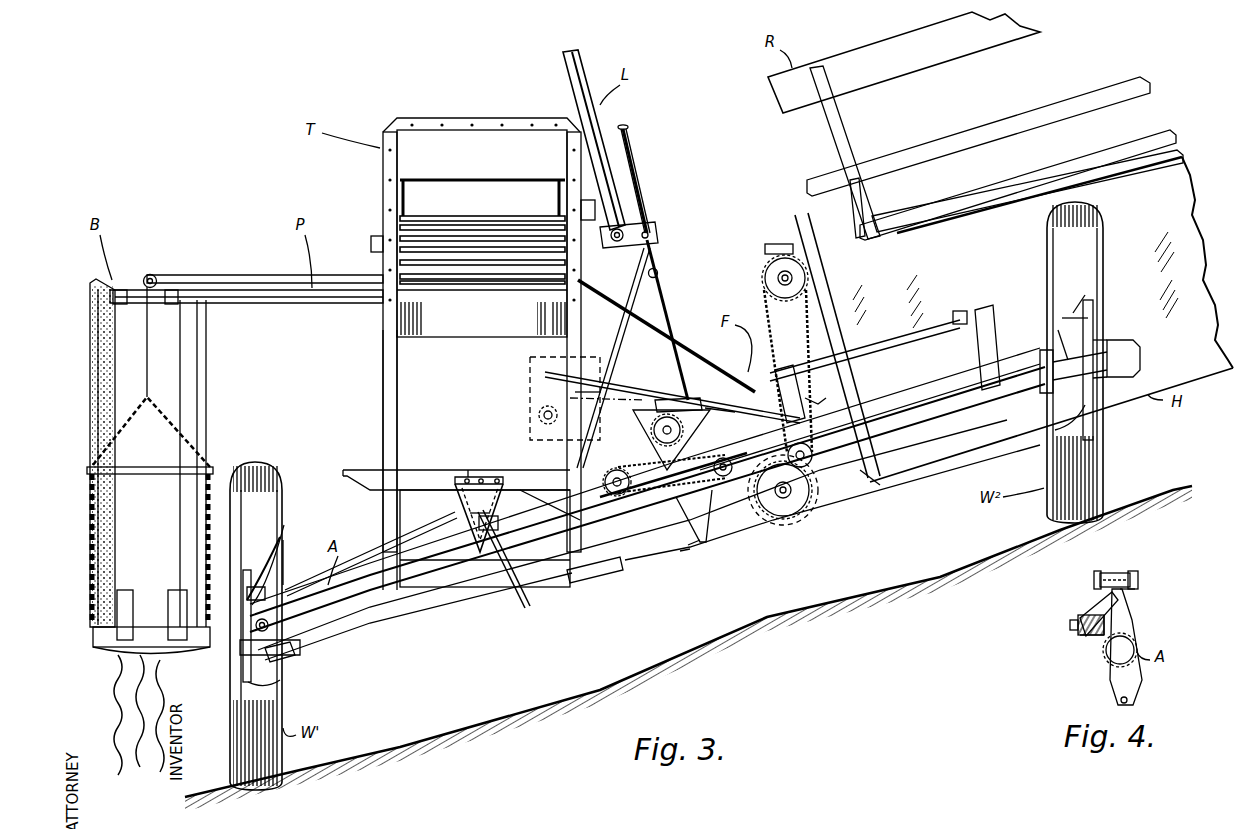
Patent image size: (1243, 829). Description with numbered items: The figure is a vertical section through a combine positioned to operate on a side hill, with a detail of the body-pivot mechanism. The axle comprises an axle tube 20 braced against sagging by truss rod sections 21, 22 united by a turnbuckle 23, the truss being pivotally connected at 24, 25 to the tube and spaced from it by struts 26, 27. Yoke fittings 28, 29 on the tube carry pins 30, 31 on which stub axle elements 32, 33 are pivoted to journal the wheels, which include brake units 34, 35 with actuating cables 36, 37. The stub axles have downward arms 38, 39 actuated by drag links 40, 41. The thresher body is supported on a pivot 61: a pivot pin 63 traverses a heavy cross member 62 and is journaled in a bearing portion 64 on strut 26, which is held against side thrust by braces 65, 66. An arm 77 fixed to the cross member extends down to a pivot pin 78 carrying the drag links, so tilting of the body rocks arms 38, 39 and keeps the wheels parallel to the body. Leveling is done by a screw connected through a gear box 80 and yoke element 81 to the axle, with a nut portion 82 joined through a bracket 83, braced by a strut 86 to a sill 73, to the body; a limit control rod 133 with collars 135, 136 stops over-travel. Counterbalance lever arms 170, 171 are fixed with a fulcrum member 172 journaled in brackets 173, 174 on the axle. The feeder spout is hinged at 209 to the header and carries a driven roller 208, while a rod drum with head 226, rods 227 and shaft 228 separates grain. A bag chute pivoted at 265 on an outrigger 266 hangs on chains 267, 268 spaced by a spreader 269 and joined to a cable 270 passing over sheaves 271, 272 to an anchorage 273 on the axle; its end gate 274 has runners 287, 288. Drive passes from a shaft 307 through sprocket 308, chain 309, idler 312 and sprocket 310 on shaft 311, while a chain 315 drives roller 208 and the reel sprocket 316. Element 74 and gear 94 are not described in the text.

In FIG. 3, the axle tube 20 is at (418, 598).
In FIG. 3, the truss rod section 21 is at (470, 610).
In FIG. 4, the truss rod section 21 is at (1112, 695).
In FIG. 3, the truss rod section 22 is at (678, 553).
In FIG. 3, the turnbuckle 23 is at (600, 586).
In FIG. 3, the pivotal connection 24 is at (292, 593).
In FIG. 3, the pivotal connection 25 is at (1042, 372).
In FIG. 3, the strut 26 is at (523, 612).
In FIG. 4, the strut 26 is at (1125, 688).
In FIG. 3, the strut 27 is at (688, 546).
In FIG. 3, the fitting 28 is at (275, 583).
In FIG. 3, the fitting 29 is at (1058, 362).
In FIG. 3, the pin 30 is at (270, 656).
In FIG. 3, the pin 31 is at (1060, 350).
In FIG. 3, the stub axle element 32 is at (254, 626).
In FIG. 3, the stub axle element 33 is at (1066, 320).
In FIG. 3, the brake unit 34 is at (282, 525).
In FIG. 3, the brake unit 35 is at (1080, 303).
In FIG. 3, the actuating cable 36 is at (283, 540).
In FIG. 3, the actuating cable 37 is at (1072, 313).
In FIG. 3, the arm 38 is at (266, 686).
In FIG. 3, the arm 39 is at (1055, 428).
In FIG. 3, the drag link 40 is at (298, 652).
In FIG. 4, the drag link 40 is at (1092, 640).
In FIG. 3, the drag link 41 is at (1000, 432).
In FIG. 4, the drag link 41 is at (1082, 637).
In FIG. 3, the pivot 61 is at (468, 468).
In FIG. 3, the cross member 62 is at (440, 474).
In FIG. 4, the cross member 62 is at (1108, 572).
In FIG. 3, the pivot pin 63 is at (483, 476).
In FIG. 4, the pivot pin 63 is at (1139, 580).
In FIG. 4, the bearing portion 64 is at (1132, 592).
In FIG. 3, the brace 65 is at (478, 523).
In FIG. 3, the brace 66 is at (525, 492).
In FIG. 3, the sill 73 is at (576, 392).
In FIG. 3, the hopper post 74 is at (383, 400).
In FIG. 3, the plate or arm 77 is at (462, 494).
In FIG. 4, the plate or arm 77 is at (1092, 605).
In FIG. 3, the pivot pin 78 is at (470, 515).
In FIG. 4, the pivot pin 78 is at (1078, 627).
In FIG. 3, the gear box 80 is at (674, 404).
In FIG. 3, the yoke element 81 is at (735, 412).
In FIG. 3, the nut portion 82 is at (630, 216).
In FIG. 3, the bracket 83 is at (634, 224).
In FIG. 3, the strut 86 is at (618, 325).
In FIG. 3, the gear 94 is at (646, 441).
In FIG. 3, the limit control rod 133 is at (663, 326).
In FIG. 3, the collar 135 is at (629, 127).
In FIG. 3, the collar 136 is at (658, 274).
In FIG. 3, the lever arm 170 is at (788, 368).
In FIG. 3, the lever arm 171 is at (958, 311).
In FIG. 3, the fulcrum member 172 is at (893, 340).
In FIG. 3, the bracket 173 is at (777, 380).
In FIG. 3, the bracket 174 is at (976, 345).
In FIG. 3, the roller 208 is at (537, 413).
In FIG. 3, the hinge 209 is at (868, 483).
In FIG. 3, the rod drum head 226 is at (445, 232).
In FIG. 3, the rods 227 is at (495, 250).
In FIG. 3, the shaft 228 is at (372, 240).
In FIG. 3, the pivot 265 is at (122, 290).
In FIG. 3, the outrigger 266 is at (215, 304).
In FIG. 3, the chain 267 is at (204, 514).
In FIG. 3, the chain 268 is at (96, 505).
In FIG. 3, the spreader 269 is at (170, 468).
In FIG. 3, the cable 270 is at (238, 275).
In FIG. 3, the sheave 271 is at (156, 278).
In FIG. 3, the sheave 272 is at (583, 287).
In FIG. 3, the anchorage 273 is at (812, 402).
In FIG. 3, the end gate 274 is at (151, 639).
In FIG. 3, the runner 287 is at (128, 590).
In FIG. 3, the runner 288 is at (168, 596).
In FIG. 3, the shaft 307 is at (616, 497).
In FIG. 3, the sprocket 308 is at (632, 498).
In FIG. 3, the chain 309 is at (642, 505).
In FIG. 3, the sprocket 310 is at (773, 516).
In FIG. 3, the shaft 311 is at (786, 500).
In FIG. 3, the idler 312 is at (712, 497).
In FIG. 3, the chain 315 is at (612, 410).
In FIG. 3, the sprocket 316 is at (770, 279).